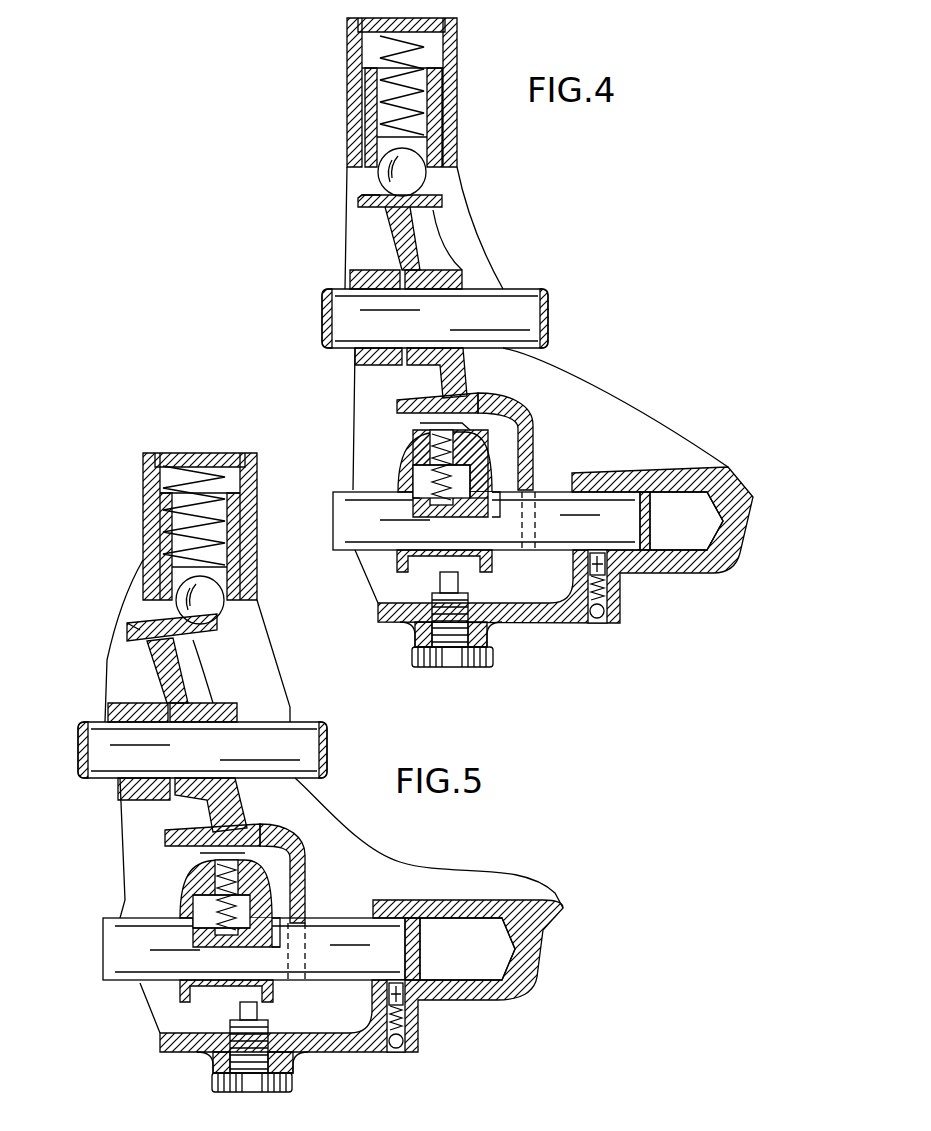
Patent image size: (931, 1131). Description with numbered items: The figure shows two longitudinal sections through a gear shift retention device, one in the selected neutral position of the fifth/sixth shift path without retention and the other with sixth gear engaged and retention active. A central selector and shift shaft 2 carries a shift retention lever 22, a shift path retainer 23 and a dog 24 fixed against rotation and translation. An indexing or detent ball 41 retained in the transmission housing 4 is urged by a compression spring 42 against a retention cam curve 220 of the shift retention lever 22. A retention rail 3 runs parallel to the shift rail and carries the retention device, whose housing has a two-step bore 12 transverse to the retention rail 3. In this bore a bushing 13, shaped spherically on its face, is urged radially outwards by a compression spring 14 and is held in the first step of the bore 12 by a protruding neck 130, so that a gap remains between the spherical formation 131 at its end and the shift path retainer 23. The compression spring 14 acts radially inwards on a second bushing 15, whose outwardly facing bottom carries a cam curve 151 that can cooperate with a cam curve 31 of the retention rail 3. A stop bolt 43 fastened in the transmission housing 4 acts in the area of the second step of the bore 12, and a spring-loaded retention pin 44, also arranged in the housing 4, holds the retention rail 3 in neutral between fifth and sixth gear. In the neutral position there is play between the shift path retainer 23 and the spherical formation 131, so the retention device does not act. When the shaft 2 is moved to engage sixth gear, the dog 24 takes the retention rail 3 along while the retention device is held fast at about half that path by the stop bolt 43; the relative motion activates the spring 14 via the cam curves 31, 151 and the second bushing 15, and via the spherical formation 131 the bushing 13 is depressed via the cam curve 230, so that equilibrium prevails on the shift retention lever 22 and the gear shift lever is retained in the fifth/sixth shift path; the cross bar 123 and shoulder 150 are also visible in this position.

In FIG. 4, the central selector and shift shaft 2 is at (517, 310).
In FIG. 5, the central selector and shift shaft 2 is at (95, 733).
In FIG. 4, the retention rail 3 is at (685, 470).
In FIG. 5, the retention rail 3 is at (385, 950).
In FIG. 4, the transmission housing 4 is at (353, 115).
In FIG. 5, the transmission housing 4 is at (527, 933).
In FIG. 4, the two-step bore 12 is at (423, 576).
In FIG. 4, the bushing 13 is at (410, 434).
In FIG. 5, the bushing 13 is at (253, 882).
In FIG. 4, the compression spring 14 is at (487, 442).
In FIG. 5, the compression spring 14 is at (215, 908).
In FIG. 4, the second bushing 15 is at (405, 495).
In FIG. 5, the second bushing 15 is at (212, 925).
In FIG. 4, the shift retention lever 22 is at (423, 248).
In FIG. 5, the shift retention lever 22 is at (172, 670).
In FIG. 4, the shift path retainer 23 is at (398, 408).
In FIG. 4, the dog 24 is at (530, 497).
In FIG. 5, the dog 24 is at (302, 882).
In FIG. 5, the cam curve of the retention rail 31 is at (245, 945).
In FIG. 4, the indexing or detent ball 41 is at (385, 175).
In FIG. 5, the indexing or detent ball 41 is at (202, 602).
In FIG. 4, the compression spring 42 is at (420, 110).
In FIG. 5, the compression spring 42 is at (194, 515).
In FIG. 4, the stop bolt 43 is at (472, 616).
In FIG. 5, the stop bolt 43 is at (238, 1012).
In FIG. 4, the spring-loaded retention pin 44 is at (606, 565).
In FIG. 5, the spring-loaded retention pin 44 is at (396, 1016).
In FIG. 5, the cross bar of rocker arm 123 is at (165, 822).
In FIG. 4, the protruding neck 130 is at (527, 470).
In FIG. 4, the spherical formation 131 is at (470, 432).
In FIG. 5, the spherical formation 131 is at (292, 868).
In FIG. 4, the pin shoulder 150 is at (472, 550).
In FIG. 4, the cam curve 151 is at (423, 523).
In FIG. 5, the cam curve 151 is at (300, 925).
In FIG. 4, the retention cam curve 220 is at (432, 194).
In FIG. 5, the retention cam curve 220 is at (168, 620).
In FIG. 5, the cam curve 230 is at (208, 852).